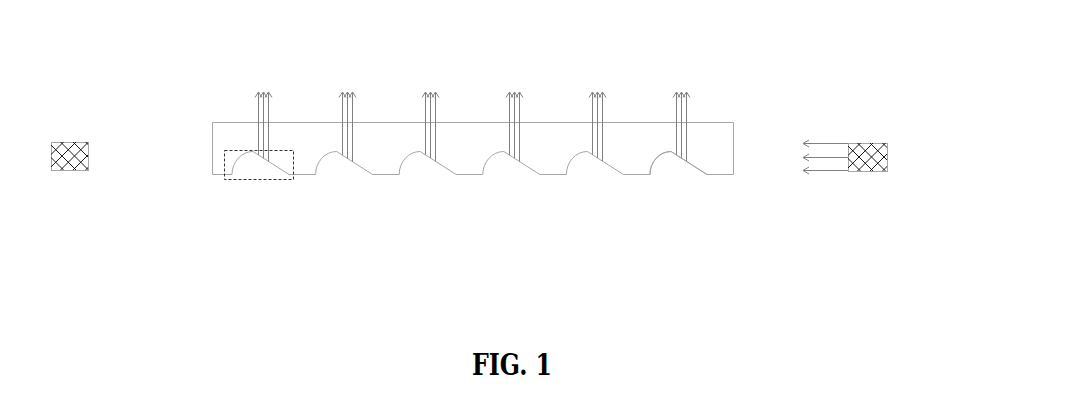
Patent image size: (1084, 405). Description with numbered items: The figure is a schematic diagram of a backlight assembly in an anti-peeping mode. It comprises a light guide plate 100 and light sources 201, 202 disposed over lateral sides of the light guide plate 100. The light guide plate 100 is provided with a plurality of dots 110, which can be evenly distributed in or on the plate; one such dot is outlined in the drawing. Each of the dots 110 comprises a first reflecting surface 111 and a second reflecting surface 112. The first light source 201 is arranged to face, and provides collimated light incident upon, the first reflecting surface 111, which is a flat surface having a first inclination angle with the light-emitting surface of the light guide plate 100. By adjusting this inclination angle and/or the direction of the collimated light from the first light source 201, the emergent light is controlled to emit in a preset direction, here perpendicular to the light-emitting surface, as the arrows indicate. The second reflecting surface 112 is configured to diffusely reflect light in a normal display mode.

The light guide plate 100 is at (505, 137).
The dots 110 is at (250, 179).
The first reflecting surface 111 is at (690, 162).
The second reflecting surface 112 is at (652, 162).
The first light source 201 is at (887, 171).
The light source 202 is at (68, 170).